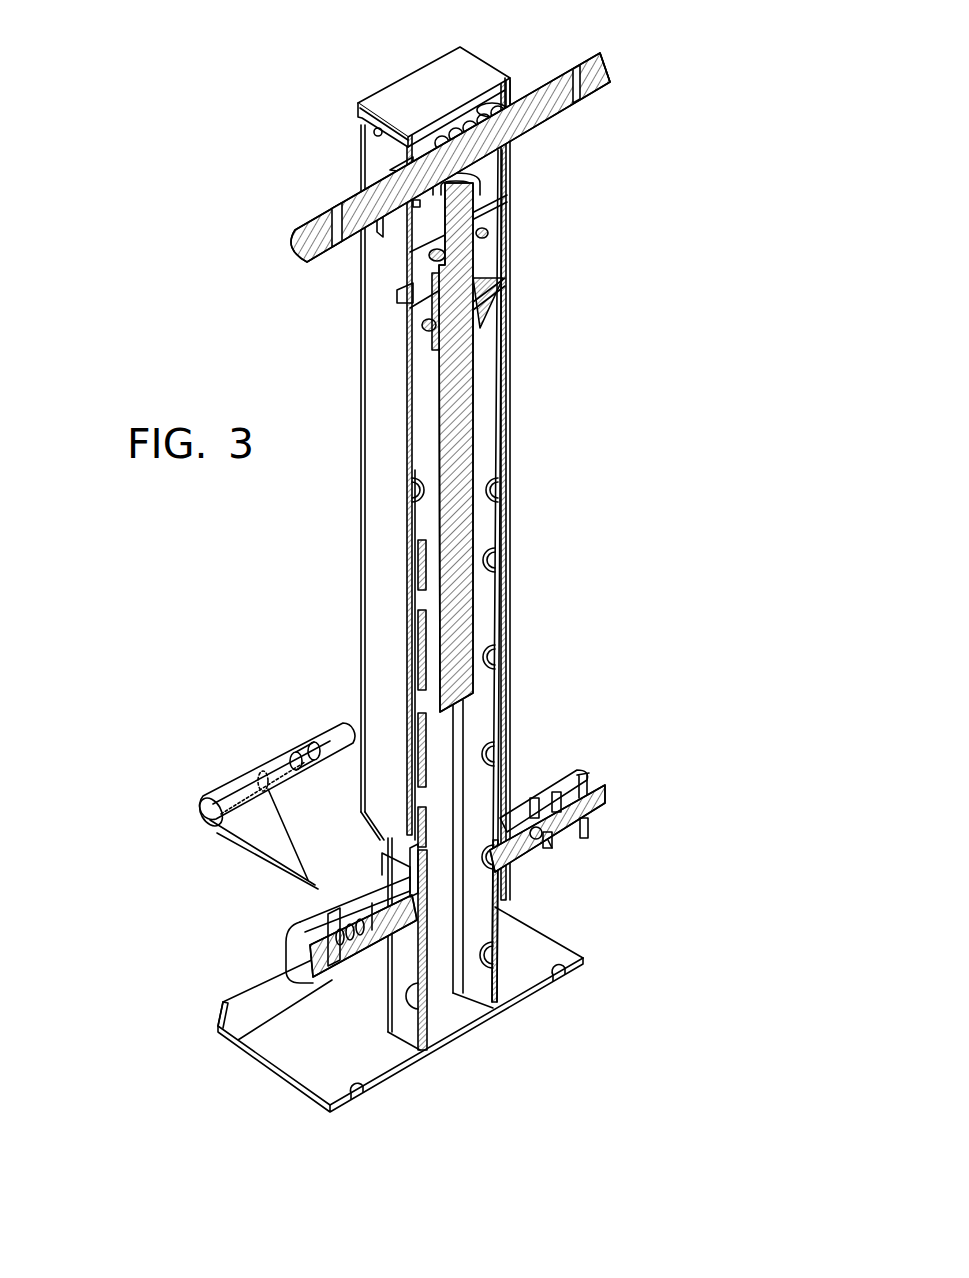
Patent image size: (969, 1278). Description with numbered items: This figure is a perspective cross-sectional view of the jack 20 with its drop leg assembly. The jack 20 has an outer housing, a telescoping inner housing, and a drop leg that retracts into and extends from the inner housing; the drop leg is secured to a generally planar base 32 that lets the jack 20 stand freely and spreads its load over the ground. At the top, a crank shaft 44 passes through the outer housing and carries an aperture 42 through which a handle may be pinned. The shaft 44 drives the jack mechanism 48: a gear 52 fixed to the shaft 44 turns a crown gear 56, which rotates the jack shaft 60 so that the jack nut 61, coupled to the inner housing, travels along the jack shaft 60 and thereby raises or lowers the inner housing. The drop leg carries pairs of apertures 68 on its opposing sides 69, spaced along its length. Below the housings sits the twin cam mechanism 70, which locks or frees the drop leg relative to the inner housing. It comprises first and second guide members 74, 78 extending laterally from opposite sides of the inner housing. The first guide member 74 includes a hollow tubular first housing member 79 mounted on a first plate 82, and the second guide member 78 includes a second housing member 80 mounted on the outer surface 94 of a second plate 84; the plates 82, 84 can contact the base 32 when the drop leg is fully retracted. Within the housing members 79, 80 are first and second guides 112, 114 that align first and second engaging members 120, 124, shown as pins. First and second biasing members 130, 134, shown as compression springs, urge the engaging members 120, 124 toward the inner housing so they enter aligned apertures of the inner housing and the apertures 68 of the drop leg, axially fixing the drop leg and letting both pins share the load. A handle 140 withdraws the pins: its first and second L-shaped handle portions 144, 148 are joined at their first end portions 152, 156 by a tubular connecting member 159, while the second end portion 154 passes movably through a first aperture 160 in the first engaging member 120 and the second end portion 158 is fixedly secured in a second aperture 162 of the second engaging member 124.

The jack 20 is at (553, 378).
The base 32 is at (242, 1008).
The aperture 42 is at (579, 72).
The shaft 44 is at (552, 100).
The jack mechanism 48 is at (548, 145).
The gear 52 is at (423, 155).
The crown gear 56 is at (512, 165).
The jack shaft 60 is at (467, 530).
The jack nut 61 is at (503, 293).
The apertures 68 is at (495, 560).
The opposing sides 69 is at (408, 1005).
The twin cam mechanism 70 is at (201, 736).
The first guide member 74 is at (630, 775).
The second guide member 78 is at (257, 938).
The first housing member 79 is at (580, 750).
The second housing member 80 is at (312, 912).
The first plate 82 is at (503, 902).
The second plate 84 is at (380, 950).
The outer surface 94 is at (395, 948).
The first guide 112 is at (592, 840).
The second guide 114 is at (318, 938).
The first engaging member 120 is at (608, 790).
The second engaging member 124 is at (219, 1027).
The first biasing member 130 is at (590, 777).
The second biasing member 134 is at (365, 895).
The handle 140 is at (263, 857).
The first handle portion 144 is at (352, 726).
The second handle portion 148 is at (213, 827).
The first end portion 152 is at (306, 755).
The second end portion 154 is at (553, 785).
The first end portion 156 is at (243, 790).
The second end portion 158 is at (375, 885).
The connecting member 159 is at (278, 760).
The first aperture 160 is at (556, 840).
The second aperture 162 is at (413, 860).